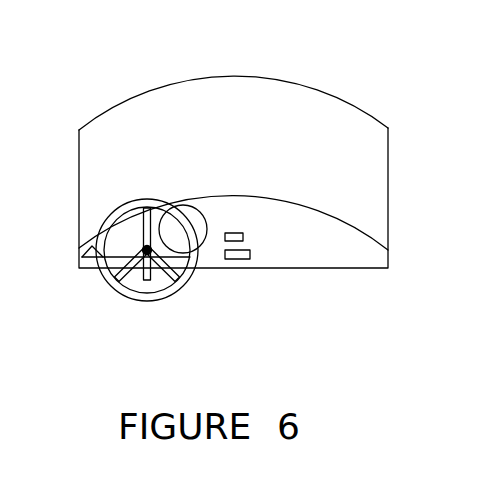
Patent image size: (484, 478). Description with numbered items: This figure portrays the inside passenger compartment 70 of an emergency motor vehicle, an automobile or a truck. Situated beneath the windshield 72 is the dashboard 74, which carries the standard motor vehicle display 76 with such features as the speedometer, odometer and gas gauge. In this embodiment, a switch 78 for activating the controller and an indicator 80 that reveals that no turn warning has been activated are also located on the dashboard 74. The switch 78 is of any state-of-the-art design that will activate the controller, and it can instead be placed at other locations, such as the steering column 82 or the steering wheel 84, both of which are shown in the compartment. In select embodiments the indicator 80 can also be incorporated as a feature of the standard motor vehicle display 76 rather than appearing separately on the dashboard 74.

The inside passenger compartment 70 is at (272, 320).
The windshield 72 is at (235, 154).
The dashboard 74 is at (327, 242).
The standard motor vehicle display 76 is at (132, 241).
The switch 78 is at (240, 257).
The indicator 80 is at (243, 237).
The steering column 82 is at (149, 254).
The steering wheel 84 is at (160, 264).